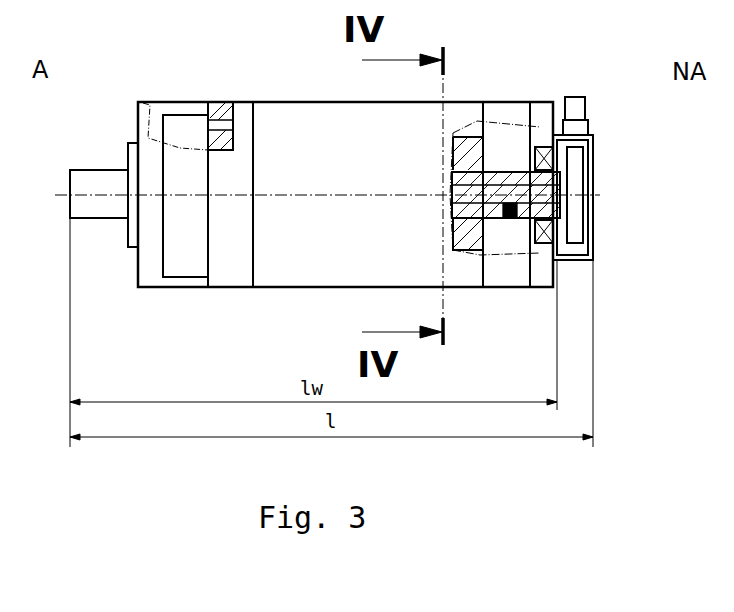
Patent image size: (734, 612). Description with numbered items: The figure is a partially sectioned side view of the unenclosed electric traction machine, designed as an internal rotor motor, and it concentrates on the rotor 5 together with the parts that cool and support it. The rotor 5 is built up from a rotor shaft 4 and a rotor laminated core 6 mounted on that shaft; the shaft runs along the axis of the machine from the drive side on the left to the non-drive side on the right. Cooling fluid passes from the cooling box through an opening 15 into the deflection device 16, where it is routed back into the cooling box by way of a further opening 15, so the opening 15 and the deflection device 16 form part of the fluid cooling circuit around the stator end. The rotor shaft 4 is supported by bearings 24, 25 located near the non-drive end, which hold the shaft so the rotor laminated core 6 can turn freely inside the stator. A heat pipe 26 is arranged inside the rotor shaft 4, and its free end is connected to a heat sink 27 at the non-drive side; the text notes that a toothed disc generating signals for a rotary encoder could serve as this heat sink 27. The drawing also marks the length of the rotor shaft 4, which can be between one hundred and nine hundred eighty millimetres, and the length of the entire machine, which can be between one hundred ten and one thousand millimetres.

The rotor shaft 4 is at (555, 213).
The rotor 5 is at (508, 218).
The rotor laminated core 6 is at (473, 140).
The opening 15 is at (232, 110).
The deflection device 16 is at (175, 105).
The bearing 24 is at (548, 145).
The bearing 25 is at (583, 141).
The heat pipe 26 is at (585, 193).
The heat sink 27 is at (585, 162).